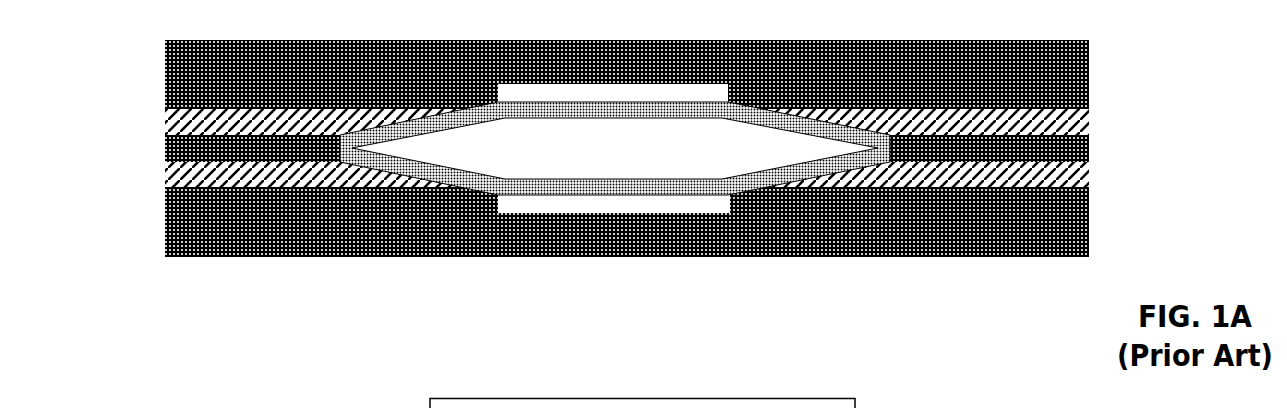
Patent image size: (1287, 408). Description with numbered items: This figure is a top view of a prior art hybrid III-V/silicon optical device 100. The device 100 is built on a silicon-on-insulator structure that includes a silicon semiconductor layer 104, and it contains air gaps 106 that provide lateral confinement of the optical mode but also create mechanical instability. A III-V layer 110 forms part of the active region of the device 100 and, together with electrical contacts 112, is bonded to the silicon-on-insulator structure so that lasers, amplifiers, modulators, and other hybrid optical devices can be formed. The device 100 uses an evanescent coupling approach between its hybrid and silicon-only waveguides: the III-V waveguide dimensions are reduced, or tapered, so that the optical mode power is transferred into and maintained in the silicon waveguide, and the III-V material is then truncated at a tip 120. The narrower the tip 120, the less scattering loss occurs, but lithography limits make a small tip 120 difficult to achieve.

The optical device 100 is at (723, 303).
The silicon semiconductor layer 104 is at (1090, 87).
The air gaps 106 is at (1077, 118).
The III-V layer 110 is at (747, 100).
The electrical contacts 112 is at (543, 42).
The tip 120 is at (888, 152).